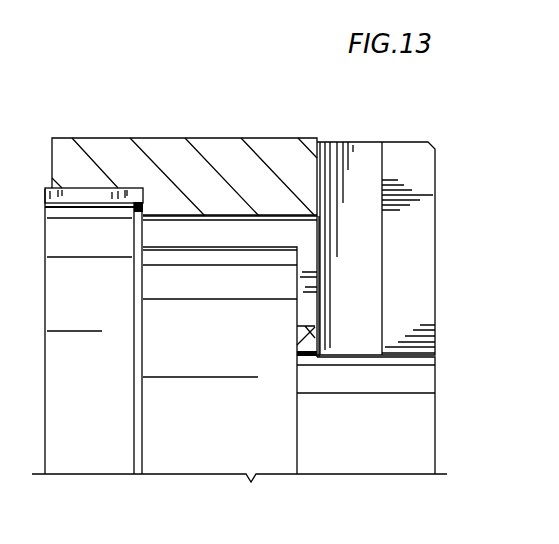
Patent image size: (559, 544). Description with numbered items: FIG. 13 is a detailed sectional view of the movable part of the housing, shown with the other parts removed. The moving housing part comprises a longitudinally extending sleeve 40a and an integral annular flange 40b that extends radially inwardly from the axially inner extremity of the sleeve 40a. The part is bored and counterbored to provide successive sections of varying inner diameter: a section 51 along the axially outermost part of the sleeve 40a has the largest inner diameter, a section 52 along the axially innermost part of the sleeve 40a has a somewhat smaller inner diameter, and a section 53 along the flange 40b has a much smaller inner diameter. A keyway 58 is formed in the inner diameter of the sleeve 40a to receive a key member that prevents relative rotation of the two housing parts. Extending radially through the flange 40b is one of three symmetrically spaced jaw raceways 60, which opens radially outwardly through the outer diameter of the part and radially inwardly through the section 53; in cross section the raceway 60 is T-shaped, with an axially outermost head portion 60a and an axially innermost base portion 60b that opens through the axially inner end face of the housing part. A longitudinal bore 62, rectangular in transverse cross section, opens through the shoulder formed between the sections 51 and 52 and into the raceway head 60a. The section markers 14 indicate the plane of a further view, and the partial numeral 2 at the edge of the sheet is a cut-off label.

The section line 14- 14 is at (23, 95).
The keyway 58 is at (97, 192).
The section 51 is at (87, 204).
The housing (partial numeral) 2 is at (4, 319).
The section 52 is at (195, 250).
The sleeve 40a is at (245, 150).
The annular flange 40b is at (312, 337).
The bore 62 is at (280, 222).
The jaw raceway 60 is at (319, 263).
The head portion 60a is at (360, 160).
The base portion 60b is at (413, 255).
The section 53 is at (311, 358).